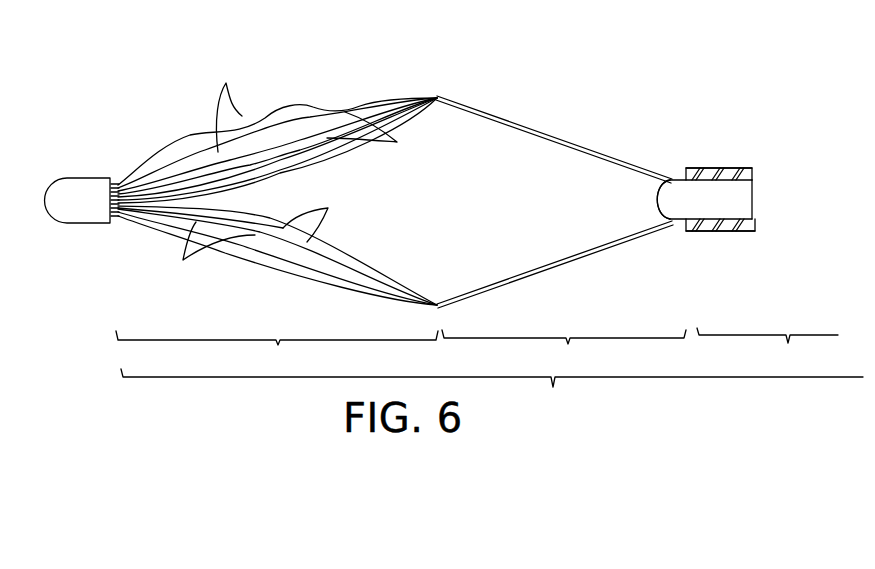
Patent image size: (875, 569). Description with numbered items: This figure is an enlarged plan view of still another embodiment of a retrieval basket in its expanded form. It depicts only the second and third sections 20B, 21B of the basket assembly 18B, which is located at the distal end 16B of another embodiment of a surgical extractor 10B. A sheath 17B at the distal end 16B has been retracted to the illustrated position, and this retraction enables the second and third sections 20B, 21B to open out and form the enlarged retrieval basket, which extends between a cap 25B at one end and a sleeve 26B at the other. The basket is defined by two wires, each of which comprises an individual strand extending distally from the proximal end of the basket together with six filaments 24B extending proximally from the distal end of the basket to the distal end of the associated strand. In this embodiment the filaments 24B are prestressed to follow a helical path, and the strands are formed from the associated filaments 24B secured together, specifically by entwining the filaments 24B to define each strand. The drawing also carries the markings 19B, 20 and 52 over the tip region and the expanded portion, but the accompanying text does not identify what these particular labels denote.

The surgical extractor 10B is at (712, 158).
The distal end 16B is at (683, 233).
The sheath 17B is at (725, 178).
The basket assembly 18B is at (492, 394).
The tip section 19B is at (767, 349).
The basket / expandable portion 20 is at (480, 273).
The second section 20B is at (564, 350).
The third section 21B is at (277, 351).
The filaments 24B is at (547, 297).
The cap 25B is at (91, 178).
The sleeve 26B is at (702, 231).
The struts 52 is at (605, 165).